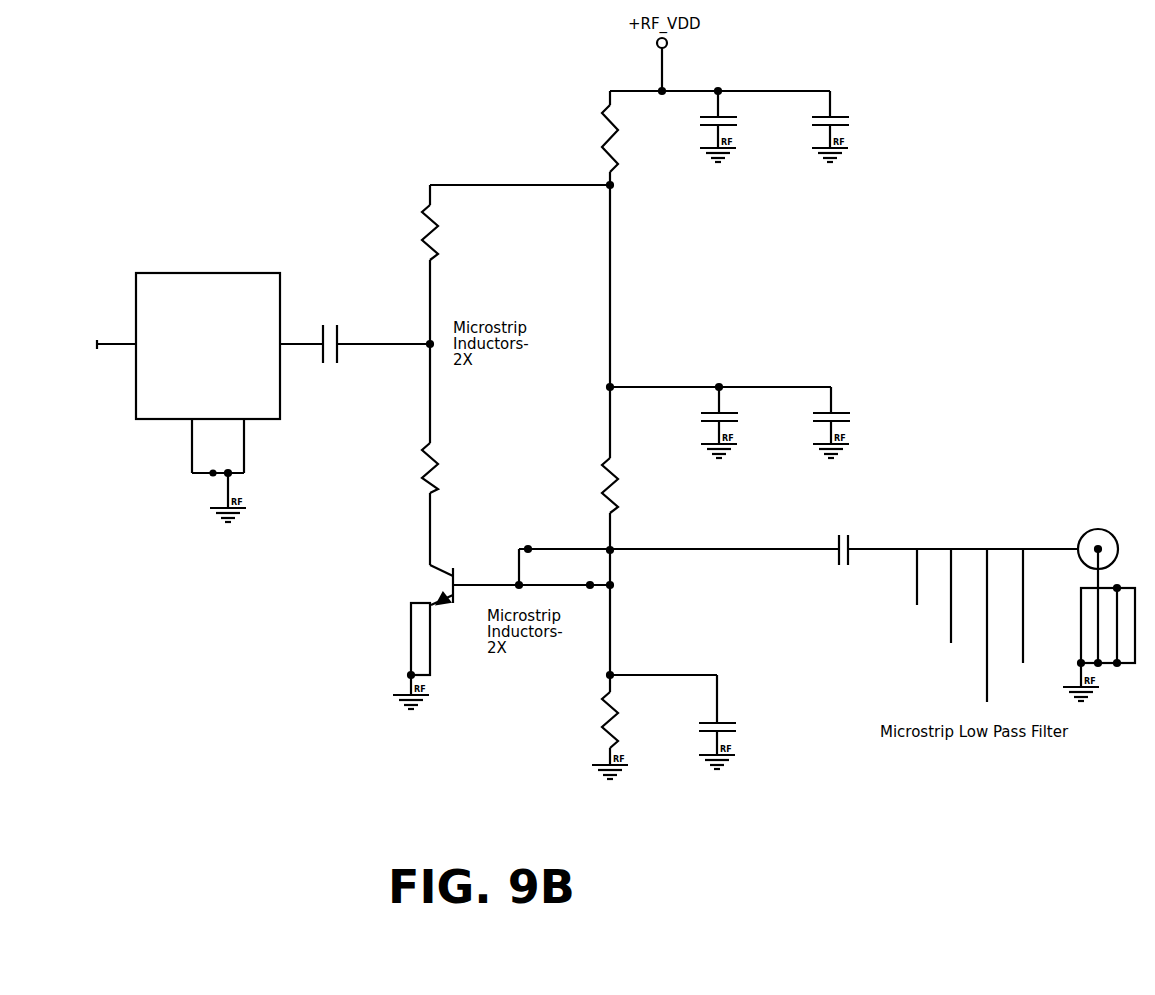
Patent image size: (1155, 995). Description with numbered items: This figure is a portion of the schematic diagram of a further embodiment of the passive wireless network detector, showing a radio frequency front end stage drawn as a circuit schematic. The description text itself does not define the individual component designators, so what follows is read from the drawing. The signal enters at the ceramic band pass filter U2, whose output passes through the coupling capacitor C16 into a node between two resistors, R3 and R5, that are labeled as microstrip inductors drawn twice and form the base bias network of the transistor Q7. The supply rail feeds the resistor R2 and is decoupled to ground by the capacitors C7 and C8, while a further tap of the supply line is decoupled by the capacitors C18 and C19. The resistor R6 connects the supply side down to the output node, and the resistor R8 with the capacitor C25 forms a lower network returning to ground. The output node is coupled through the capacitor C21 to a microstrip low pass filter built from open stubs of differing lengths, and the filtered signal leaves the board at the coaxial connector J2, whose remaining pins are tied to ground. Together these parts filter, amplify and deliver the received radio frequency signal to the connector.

The ceramic band-pass filter U2 is at (195, 375).
The coupling capacitor 4.7pF C16 is at (355, 331).
The resistor 4.7 R3 is at (446, 232).
The resistor 4.7 R5 is at (446, 468).
The transistor BFG410W Q7 is at (477, 629).
The resistor 75 R2 is at (625, 138).
The capacitor 100pF C7 is at (744, 126).
The capacitor .1uF C8 is at (850, 126).
The capacitor 4.7pF C18 is at (742, 422).
The capacitor 100pF C19 is at (856, 422).
The resistor 3.9K R6 is at (632, 485).
The capacitor 5.6pF C21 is at (955, 531).
The SMA connector J2 is at (1104, 601).
The resistor 2.2K R8 is at (627, 735).
The capacitor 10pF C25 is at (738, 722).